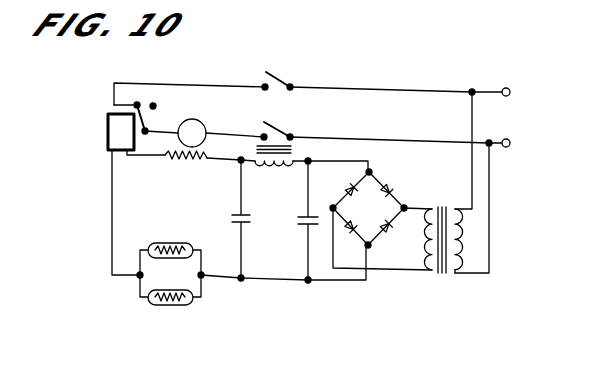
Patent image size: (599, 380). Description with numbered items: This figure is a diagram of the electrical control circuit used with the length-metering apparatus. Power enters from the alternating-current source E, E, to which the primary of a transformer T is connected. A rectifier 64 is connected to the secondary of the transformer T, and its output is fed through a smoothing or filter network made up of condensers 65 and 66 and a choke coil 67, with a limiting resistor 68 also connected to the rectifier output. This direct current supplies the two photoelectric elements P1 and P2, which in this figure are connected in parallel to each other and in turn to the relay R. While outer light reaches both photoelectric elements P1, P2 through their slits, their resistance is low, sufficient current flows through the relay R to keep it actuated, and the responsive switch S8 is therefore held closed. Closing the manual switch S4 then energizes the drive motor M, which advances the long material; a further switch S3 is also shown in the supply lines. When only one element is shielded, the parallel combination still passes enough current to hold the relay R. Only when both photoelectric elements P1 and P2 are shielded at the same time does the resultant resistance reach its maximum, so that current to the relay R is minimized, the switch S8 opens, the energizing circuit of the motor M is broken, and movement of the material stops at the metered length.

The rectifier 64 is at (380, 186).
The condenser 65 is at (298, 231).
The condenser 66 is at (246, 215).
The choke coil 67 is at (266, 166).
The limiting resistor 68 is at (168, 162).
The A.C. power source E is at (510, 92).
The drive motor M is at (204, 133).
The relay R is at (114, 128).
The switch S3 is at (278, 82).
The manual switch S4 is at (290, 118).
The responsive switch S8 is at (148, 101).
The transformer T is at (446, 279).
The photoelectric element P1 is at (186, 231).
The photoelectric element P2 is at (172, 306).